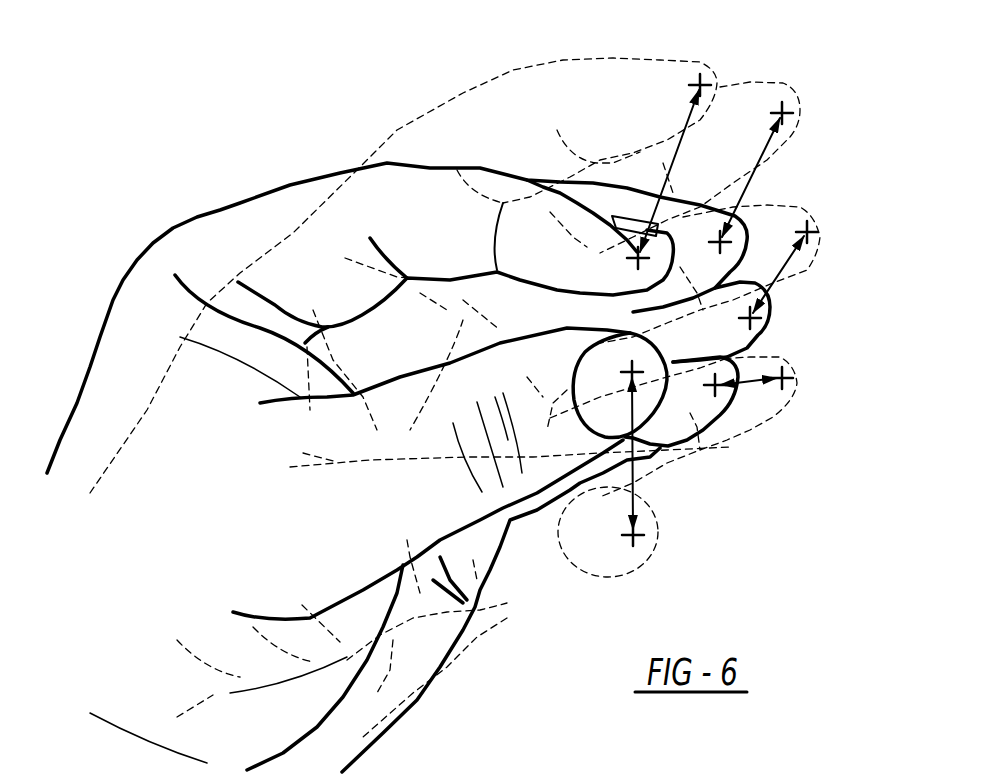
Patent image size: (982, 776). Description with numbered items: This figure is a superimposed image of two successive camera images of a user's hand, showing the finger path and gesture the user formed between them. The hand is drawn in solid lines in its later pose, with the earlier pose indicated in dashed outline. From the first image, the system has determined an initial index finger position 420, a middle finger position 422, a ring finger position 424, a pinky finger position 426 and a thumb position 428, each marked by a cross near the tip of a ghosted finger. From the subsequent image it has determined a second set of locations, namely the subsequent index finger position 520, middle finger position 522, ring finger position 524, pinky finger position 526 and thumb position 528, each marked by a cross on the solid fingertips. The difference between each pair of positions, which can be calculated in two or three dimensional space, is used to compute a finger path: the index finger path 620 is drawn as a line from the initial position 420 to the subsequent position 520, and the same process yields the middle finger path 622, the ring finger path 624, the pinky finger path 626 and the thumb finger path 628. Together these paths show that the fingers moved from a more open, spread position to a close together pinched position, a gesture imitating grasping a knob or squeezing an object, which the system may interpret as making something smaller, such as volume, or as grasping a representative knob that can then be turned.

The index finger position 420 is at (703, 80).
The middle finger position 422 is at (784, 112).
The ring finger position 424 is at (812, 230).
The pinky finger position 426 is at (790, 377).
The thumb position 428 is at (634, 537).
The subsequent index finger position 520 is at (633, 257).
The middle finger position 522 is at (737, 252).
The ring finger position 524 is at (760, 328).
The pinky finger position 526 is at (715, 385).
The thumb position 528 is at (628, 370).
The index finger path 620 is at (677, 157).
The middle finger path 622 is at (757, 192).
The ring finger path 624 is at (785, 263).
The pinky finger path 626 is at (757, 383).
The thumb finger path 628 is at (665, 450).